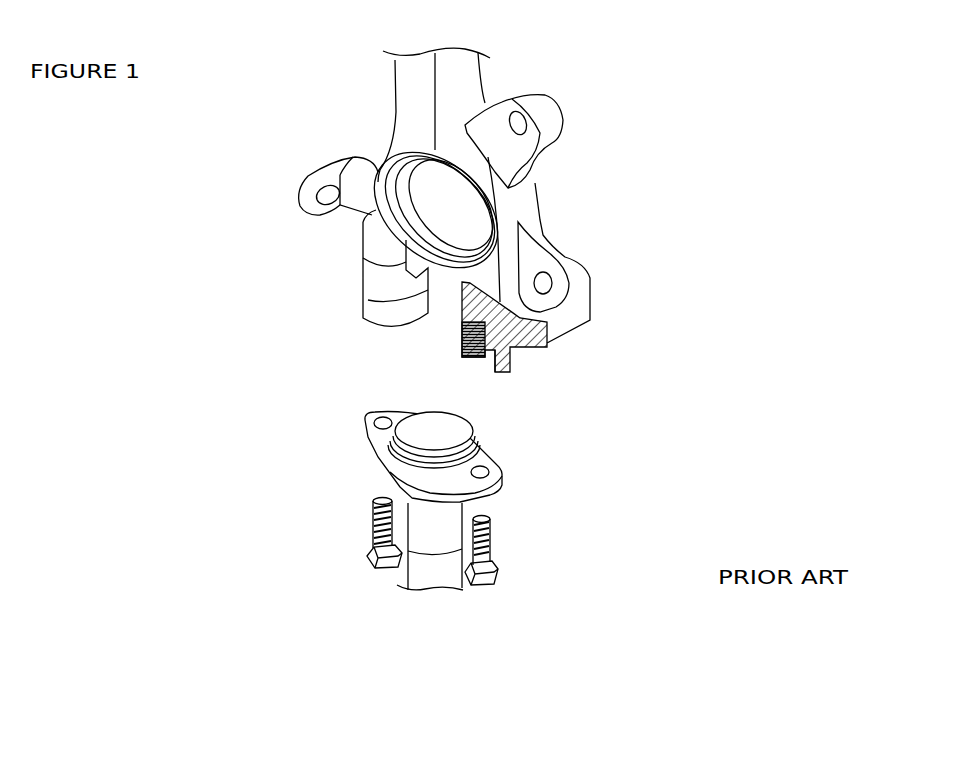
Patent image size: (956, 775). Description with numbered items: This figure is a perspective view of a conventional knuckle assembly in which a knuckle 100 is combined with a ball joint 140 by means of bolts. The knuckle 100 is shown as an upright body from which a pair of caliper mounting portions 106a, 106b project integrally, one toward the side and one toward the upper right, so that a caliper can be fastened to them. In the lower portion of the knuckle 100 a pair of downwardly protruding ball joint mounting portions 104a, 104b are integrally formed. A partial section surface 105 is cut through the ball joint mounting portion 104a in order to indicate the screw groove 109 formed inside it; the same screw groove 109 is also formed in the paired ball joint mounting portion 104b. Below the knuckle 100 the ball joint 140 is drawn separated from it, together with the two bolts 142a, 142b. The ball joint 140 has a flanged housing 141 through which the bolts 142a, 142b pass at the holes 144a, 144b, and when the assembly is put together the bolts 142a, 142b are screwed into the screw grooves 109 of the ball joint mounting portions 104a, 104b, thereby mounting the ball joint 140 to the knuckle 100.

The knuckle 100 is at (358, 147).
The ball joint mounting portion 104a is at (462, 308).
The ball joint mounting portion 104b is at (362, 290).
The partial section surface 105 is at (537, 347).
The caliper mounting portion 106a is at (588, 284).
The caliper mounting portion 106b is at (524, 92).
The screw groove 109 is at (460, 347).
The ball joint 140 is at (375, 478).
The ball joint housing flange 141 is at (500, 484).
The bolt 142a is at (490, 584).
The bolt 142b is at (367, 566).
The bolt hole 144a is at (500, 465).
The bolt hole 144b is at (370, 416).